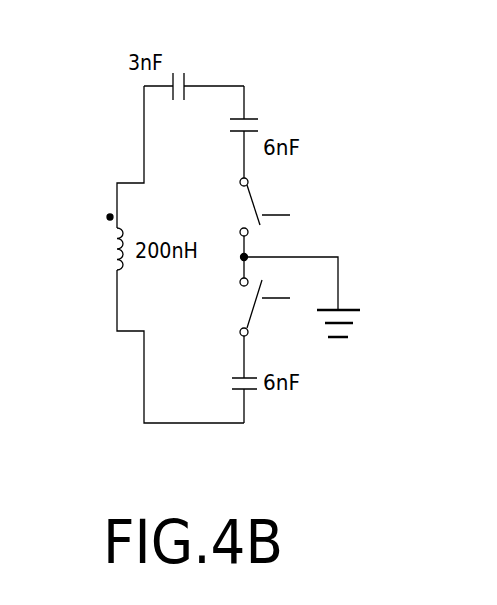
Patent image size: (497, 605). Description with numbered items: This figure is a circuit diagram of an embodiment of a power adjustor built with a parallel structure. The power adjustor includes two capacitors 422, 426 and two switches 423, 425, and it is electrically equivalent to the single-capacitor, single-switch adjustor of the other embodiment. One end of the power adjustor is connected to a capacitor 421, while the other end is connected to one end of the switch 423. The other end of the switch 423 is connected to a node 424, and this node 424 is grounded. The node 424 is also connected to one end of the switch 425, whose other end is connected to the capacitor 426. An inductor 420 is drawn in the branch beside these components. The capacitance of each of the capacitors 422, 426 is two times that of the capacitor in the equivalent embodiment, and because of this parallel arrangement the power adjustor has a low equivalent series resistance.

The inductor 420 is at (110, 267).
The capacitor 421 is at (183, 72).
The capacitor 422 is at (248, 118).
The switch 423 is at (253, 196).
The node 424 is at (245, 256).
The switch 425 is at (249, 331).
The capacitor 426 is at (303, 383).